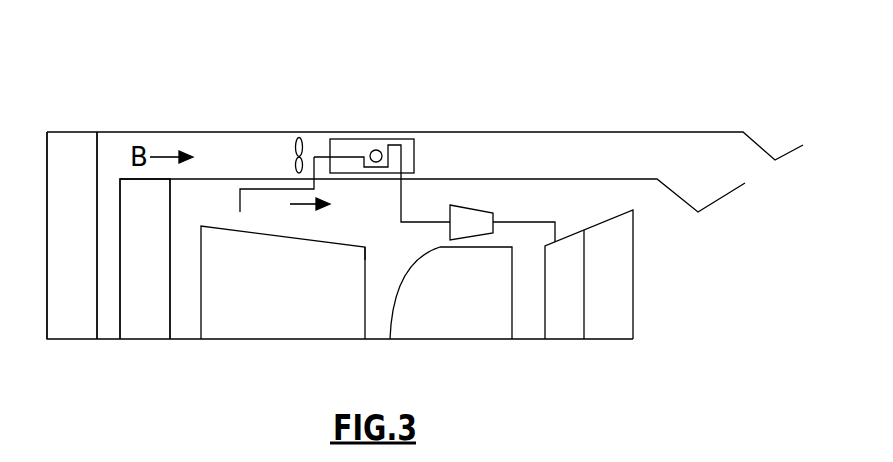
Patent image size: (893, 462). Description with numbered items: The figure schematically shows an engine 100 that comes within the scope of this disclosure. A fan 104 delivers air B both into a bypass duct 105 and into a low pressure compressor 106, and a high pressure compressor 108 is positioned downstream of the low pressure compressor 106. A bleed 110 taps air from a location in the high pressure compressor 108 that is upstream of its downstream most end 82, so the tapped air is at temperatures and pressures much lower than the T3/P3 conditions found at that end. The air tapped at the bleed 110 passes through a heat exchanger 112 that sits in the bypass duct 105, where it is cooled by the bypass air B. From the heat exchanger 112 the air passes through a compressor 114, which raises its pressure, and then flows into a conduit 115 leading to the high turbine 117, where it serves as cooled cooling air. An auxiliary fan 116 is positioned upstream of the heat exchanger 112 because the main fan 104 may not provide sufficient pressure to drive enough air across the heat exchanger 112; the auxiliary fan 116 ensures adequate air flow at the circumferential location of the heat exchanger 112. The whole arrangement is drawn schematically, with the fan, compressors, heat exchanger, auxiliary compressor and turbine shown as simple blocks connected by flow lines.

The engine 100 is at (345, 63).
The fan 104 is at (77, 152).
The bypass duct 105 is at (217, 152).
The low pressure compressor 106 is at (146, 325).
The high pressure compressor 108 is at (240, 325).
The downstream most end 82 is at (365, 247).
The bleed 110 is at (240, 212).
The heat exchanger 112 is at (373, 140).
The compressor 114 is at (463, 205).
The conduit 115 is at (530, 222).
The auxiliary fan 116 is at (297, 136).
The high turbine 117 is at (568, 327).